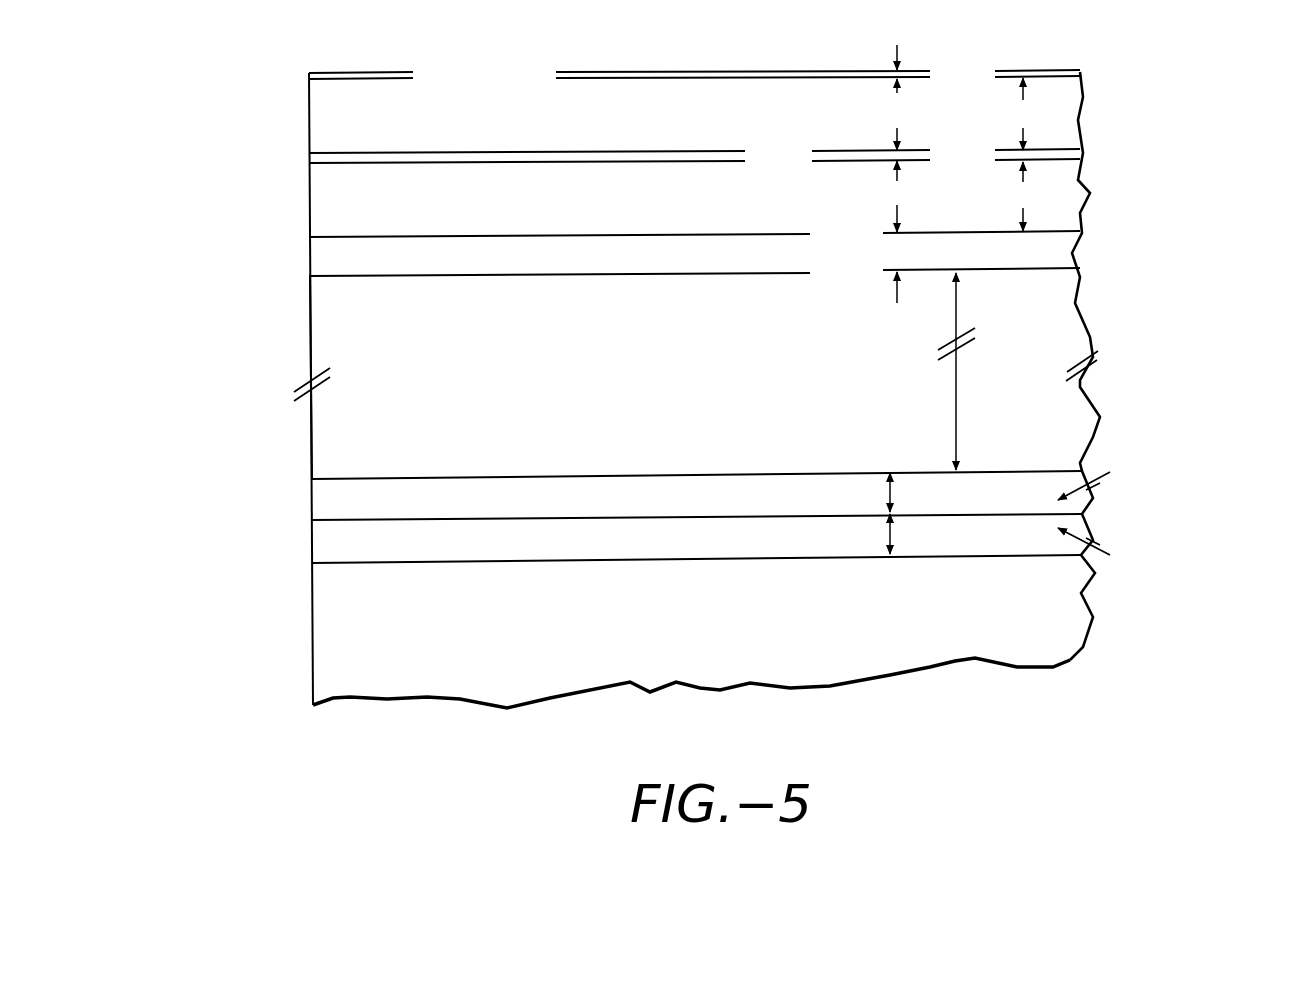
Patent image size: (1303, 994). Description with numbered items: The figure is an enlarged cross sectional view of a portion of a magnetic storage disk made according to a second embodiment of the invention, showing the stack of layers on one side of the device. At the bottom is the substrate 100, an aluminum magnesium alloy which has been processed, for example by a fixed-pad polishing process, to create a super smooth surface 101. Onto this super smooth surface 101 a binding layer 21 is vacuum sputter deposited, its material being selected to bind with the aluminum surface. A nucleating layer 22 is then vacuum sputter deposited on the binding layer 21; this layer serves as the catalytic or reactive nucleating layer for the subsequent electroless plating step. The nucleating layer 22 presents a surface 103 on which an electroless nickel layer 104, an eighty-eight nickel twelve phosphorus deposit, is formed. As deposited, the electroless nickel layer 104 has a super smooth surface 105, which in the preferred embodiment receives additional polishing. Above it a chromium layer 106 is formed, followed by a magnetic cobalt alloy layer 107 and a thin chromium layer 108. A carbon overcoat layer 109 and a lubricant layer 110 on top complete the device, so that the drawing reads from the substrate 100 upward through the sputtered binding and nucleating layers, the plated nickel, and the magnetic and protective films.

The lubricant layer 110 is at (357, 78).
The carbon overcoat layer 109 is at (332, 103).
The thin chromium layer 108 is at (318, 162).
The magnetic cobalt alloy layer 107 is at (343, 203).
The chromium layer 106 is at (317, 263).
The super smooth surface 105 is at (357, 280).
The electroless nickel layer 104 is at (707, 371).
The surface 103 is at (345, 487).
The nucleating layer 22 is at (328, 503).
The binding layer 21 is at (332, 538).
The super smooth surface 101 is at (377, 565).
The substrate 100 is at (940, 642).